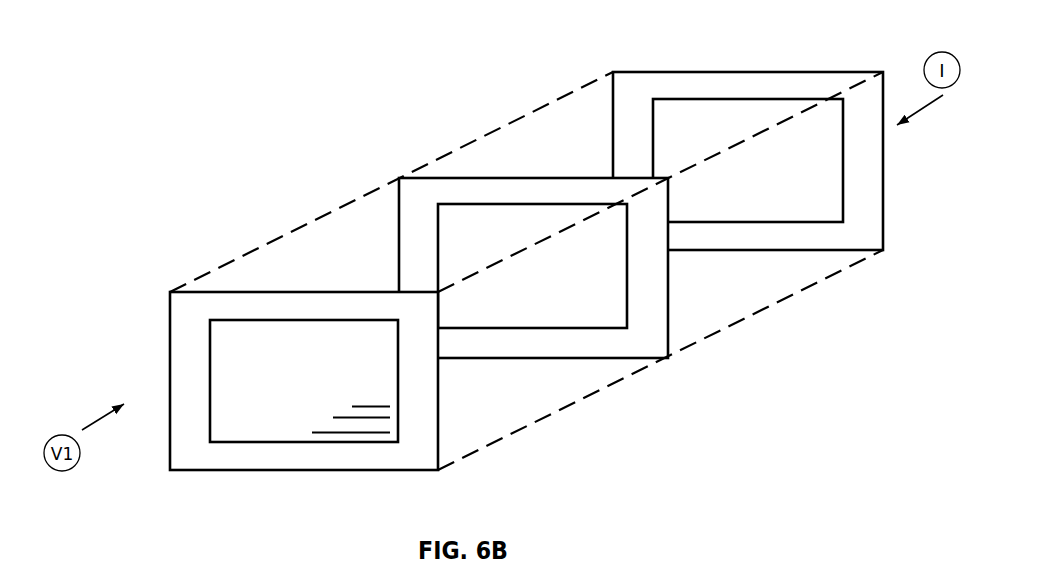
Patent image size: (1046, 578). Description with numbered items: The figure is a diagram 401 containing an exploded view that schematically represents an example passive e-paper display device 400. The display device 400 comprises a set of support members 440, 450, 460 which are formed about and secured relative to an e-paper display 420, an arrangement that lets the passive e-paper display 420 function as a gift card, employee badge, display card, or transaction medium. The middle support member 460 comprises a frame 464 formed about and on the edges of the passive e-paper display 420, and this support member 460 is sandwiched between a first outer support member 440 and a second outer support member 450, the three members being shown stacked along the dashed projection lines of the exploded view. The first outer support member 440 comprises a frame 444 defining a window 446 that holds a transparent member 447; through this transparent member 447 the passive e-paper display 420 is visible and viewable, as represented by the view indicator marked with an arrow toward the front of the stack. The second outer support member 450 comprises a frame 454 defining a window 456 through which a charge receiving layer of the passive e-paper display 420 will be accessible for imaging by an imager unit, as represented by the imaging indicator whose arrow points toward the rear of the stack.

The passive e-paper display device 400 is at (213, 210).
The diagram 401 is at (178, 70).
The e-paper display 420 is at (598, 304).
The first outer support member 440 is at (271, 403).
The frame 444 is at (235, 458).
The window 446 is at (278, 444).
The transparent member 447 is at (323, 388).
The second outer support member 450 is at (748, 135).
The frame 454 is at (758, 80).
The window 456 is at (793, 98).
The support member 460 is at (503, 228).
The frame 464 is at (513, 193).